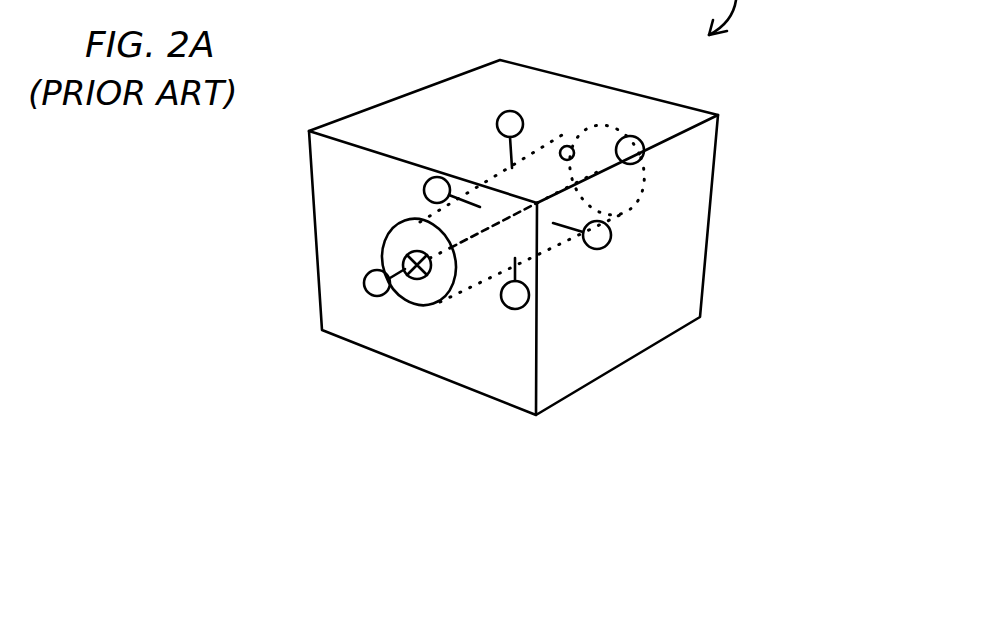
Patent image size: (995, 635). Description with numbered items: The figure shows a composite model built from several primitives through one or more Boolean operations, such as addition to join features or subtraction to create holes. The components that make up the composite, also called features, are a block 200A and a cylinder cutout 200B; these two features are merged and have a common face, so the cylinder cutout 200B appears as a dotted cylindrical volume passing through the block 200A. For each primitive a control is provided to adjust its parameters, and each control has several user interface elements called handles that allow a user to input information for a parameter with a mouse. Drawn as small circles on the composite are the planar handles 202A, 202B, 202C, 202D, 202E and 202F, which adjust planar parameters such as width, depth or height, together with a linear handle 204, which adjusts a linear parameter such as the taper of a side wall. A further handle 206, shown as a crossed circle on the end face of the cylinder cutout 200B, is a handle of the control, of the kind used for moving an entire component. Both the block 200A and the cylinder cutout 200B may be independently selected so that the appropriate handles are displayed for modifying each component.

The block 200A is at (420, 117).
The cylinder cutout 200B is at (442, 303).
The planar handle 202A is at (510, 111).
The planar handle 202B is at (644, 150).
The planar handle 202C is at (600, 249).
The planar handle 202D is at (520, 309).
The planar handle 202E is at (364, 284).
The planar handle 202F is at (424, 188).
The linear handle 204 is at (561, 147).
The handle 206 is at (408, 277).